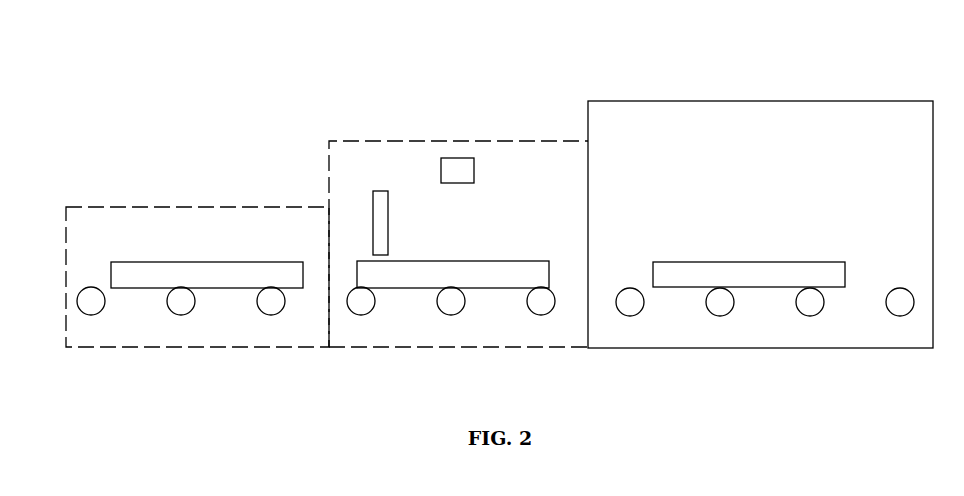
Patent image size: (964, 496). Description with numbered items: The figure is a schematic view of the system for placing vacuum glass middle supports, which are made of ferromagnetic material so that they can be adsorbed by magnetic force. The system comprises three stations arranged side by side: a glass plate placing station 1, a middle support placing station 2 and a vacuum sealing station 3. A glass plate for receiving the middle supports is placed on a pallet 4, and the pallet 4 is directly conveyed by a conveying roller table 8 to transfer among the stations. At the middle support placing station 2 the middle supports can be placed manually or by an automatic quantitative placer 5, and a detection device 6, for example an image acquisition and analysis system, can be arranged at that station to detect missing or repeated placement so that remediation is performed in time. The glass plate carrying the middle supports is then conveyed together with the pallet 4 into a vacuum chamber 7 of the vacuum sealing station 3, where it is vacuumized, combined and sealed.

The glass plate placing station 1 is at (202, 205).
The middle support placing station 2 is at (437, 140).
The vacuum sealing station 3 is at (700, 72).
The pallet 4 is at (137, 273).
The automatic quantitative placer 5 is at (379, 200).
The detection device 6 is at (455, 167).
The vacuum chamber 7 is at (778, 138).
The conveying roller table 8 is at (629, 303).